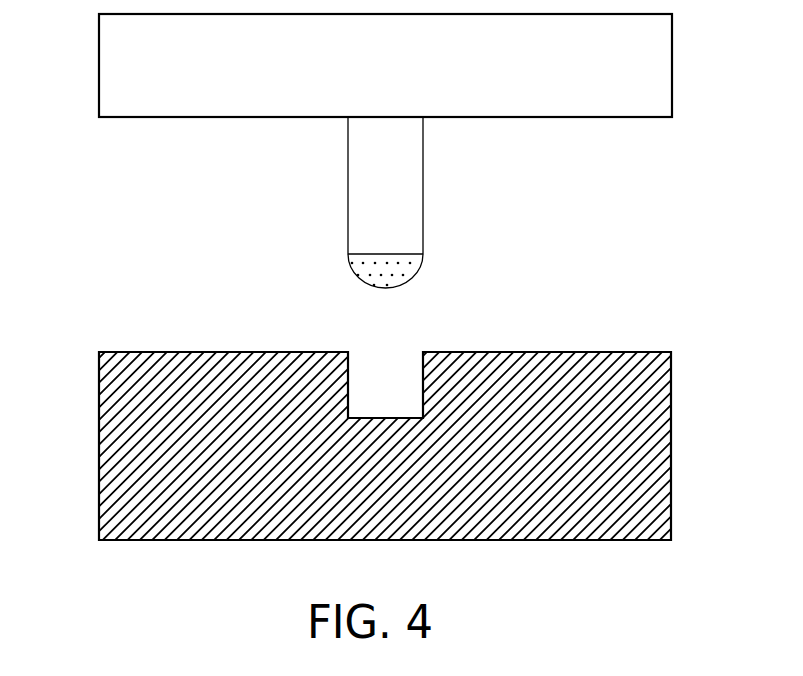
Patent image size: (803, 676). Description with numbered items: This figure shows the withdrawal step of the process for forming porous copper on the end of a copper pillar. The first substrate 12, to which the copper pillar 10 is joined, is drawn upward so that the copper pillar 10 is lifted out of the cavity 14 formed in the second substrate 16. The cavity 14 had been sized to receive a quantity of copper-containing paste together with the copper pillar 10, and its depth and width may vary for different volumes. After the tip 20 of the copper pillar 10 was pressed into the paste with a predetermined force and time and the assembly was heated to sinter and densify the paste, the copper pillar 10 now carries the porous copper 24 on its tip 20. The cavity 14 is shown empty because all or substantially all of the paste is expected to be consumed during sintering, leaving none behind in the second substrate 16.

The first substrate 12 is at (110, 46).
The copper pillar 10 is at (370, 172).
The tip 20 is at (394, 253).
The porous copper 24 is at (370, 277).
The cavity 14 is at (399, 387).
The second substrate 16 is at (115, 437).